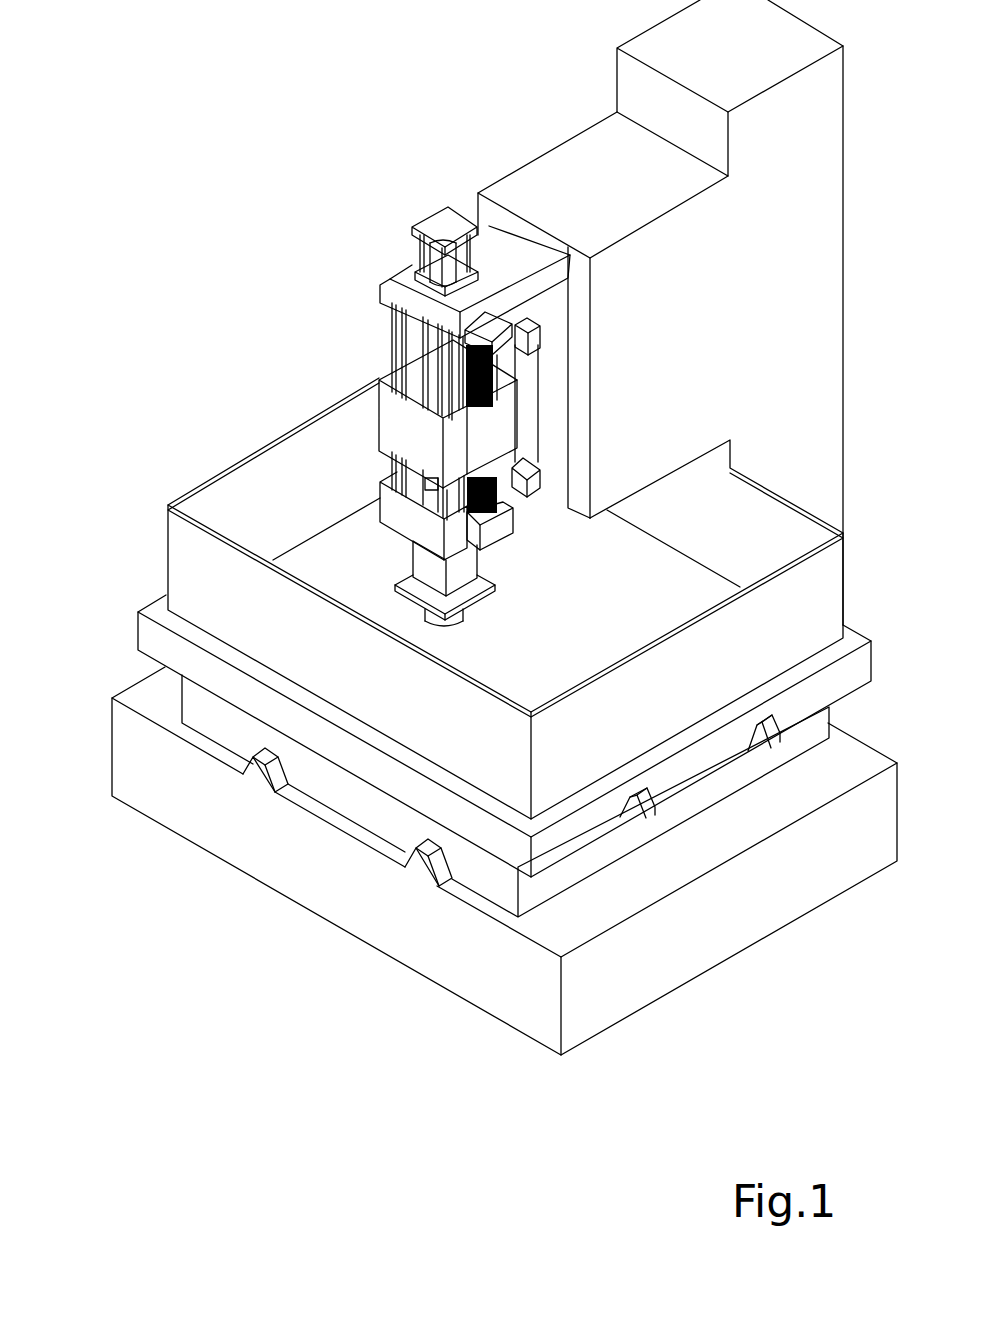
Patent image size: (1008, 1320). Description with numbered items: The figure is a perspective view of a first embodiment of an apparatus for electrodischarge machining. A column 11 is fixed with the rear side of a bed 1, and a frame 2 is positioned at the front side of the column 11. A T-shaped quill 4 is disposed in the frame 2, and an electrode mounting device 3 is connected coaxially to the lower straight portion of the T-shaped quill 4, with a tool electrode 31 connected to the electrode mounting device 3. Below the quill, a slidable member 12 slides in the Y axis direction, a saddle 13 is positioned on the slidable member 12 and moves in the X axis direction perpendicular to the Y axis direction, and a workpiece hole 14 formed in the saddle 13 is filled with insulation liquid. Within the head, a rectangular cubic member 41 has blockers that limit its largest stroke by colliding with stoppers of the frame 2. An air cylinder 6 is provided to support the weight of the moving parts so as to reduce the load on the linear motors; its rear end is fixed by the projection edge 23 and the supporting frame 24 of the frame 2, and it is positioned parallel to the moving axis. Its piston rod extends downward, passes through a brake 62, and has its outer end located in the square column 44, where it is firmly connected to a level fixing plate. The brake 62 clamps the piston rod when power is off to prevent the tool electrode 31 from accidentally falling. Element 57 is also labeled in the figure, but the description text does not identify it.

The bed 1 is at (485, 861).
The frame 2 is at (676, 312).
The electrode mounting device 3 is at (331, 531).
The T-shaped quill 4 is at (508, 384).
The air cylinder 6 is at (395, 238).
The column 11 is at (871, 118).
The slidable member 12 is at (431, 796).
The saddle 13 is at (460, 736).
The workpiece hole 14 is at (454, 598).
The projection edge 23 is at (390, 196).
The supporting frame 24 is at (395, 260).
The tool electrode 31 is at (458, 632).
The rectangular cubic member 41 is at (317, 409).
The square column 44 is at (314, 467).
The lower slide block 57 is at (292, 458).
The brake 62 is at (423, 291).